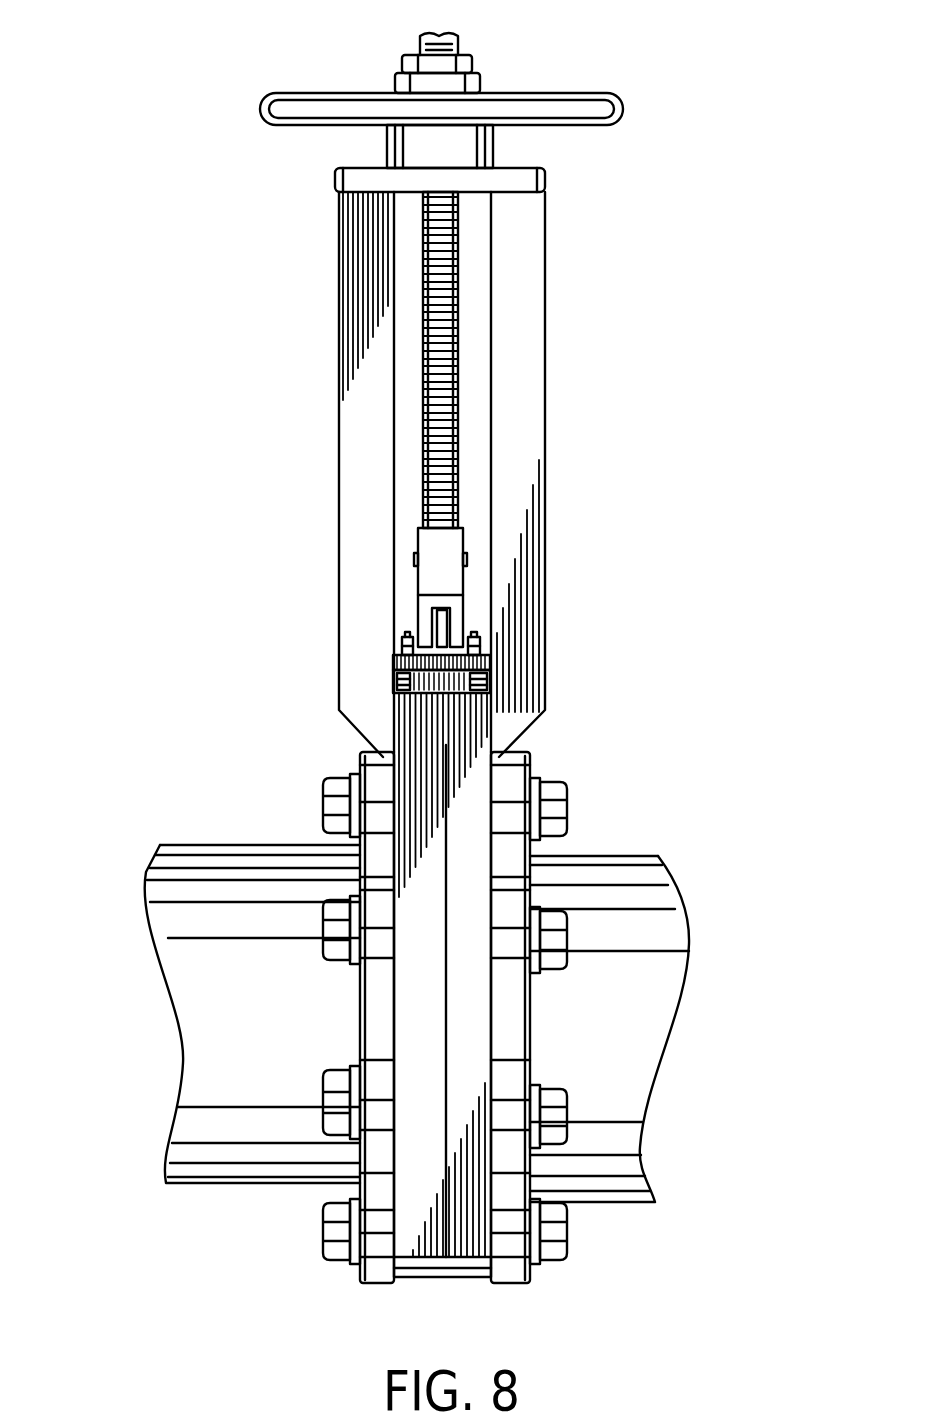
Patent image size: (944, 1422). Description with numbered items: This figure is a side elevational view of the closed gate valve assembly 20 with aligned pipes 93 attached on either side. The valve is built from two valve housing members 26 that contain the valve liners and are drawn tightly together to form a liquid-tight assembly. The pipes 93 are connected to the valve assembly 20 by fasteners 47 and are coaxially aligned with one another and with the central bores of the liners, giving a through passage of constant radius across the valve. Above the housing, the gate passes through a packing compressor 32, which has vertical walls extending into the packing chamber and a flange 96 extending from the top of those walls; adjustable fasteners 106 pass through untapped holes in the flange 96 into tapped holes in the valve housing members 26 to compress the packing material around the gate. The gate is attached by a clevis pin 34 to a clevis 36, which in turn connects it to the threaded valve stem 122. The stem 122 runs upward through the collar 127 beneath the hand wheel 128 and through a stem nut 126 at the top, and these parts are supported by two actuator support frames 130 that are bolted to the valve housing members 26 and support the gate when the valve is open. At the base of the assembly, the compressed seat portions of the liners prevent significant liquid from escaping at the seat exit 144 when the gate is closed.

The gate valve assembly 20 is at (562, 731).
The valve housing members 26 is at (410, 1277).
The packing compressor 32 is at (488, 663).
The clevis pin 34 is at (468, 618).
The clevis 36 is at (428, 573).
The fasteners 47 is at (569, 811).
The pipes 93 is at (184, 843).
The flange 96 is at (395, 665).
The adjustable fasteners 106 is at (490, 683).
The threaded valve stem 122 is at (458, 280).
The stem nut 126 is at (477, 55).
The handwheel collar 127 is at (490, 143).
The hand wheel 128 is at (594, 92).
The actuator support frames 130 is at (546, 312).
The seat exit 144 is at (444, 1278).